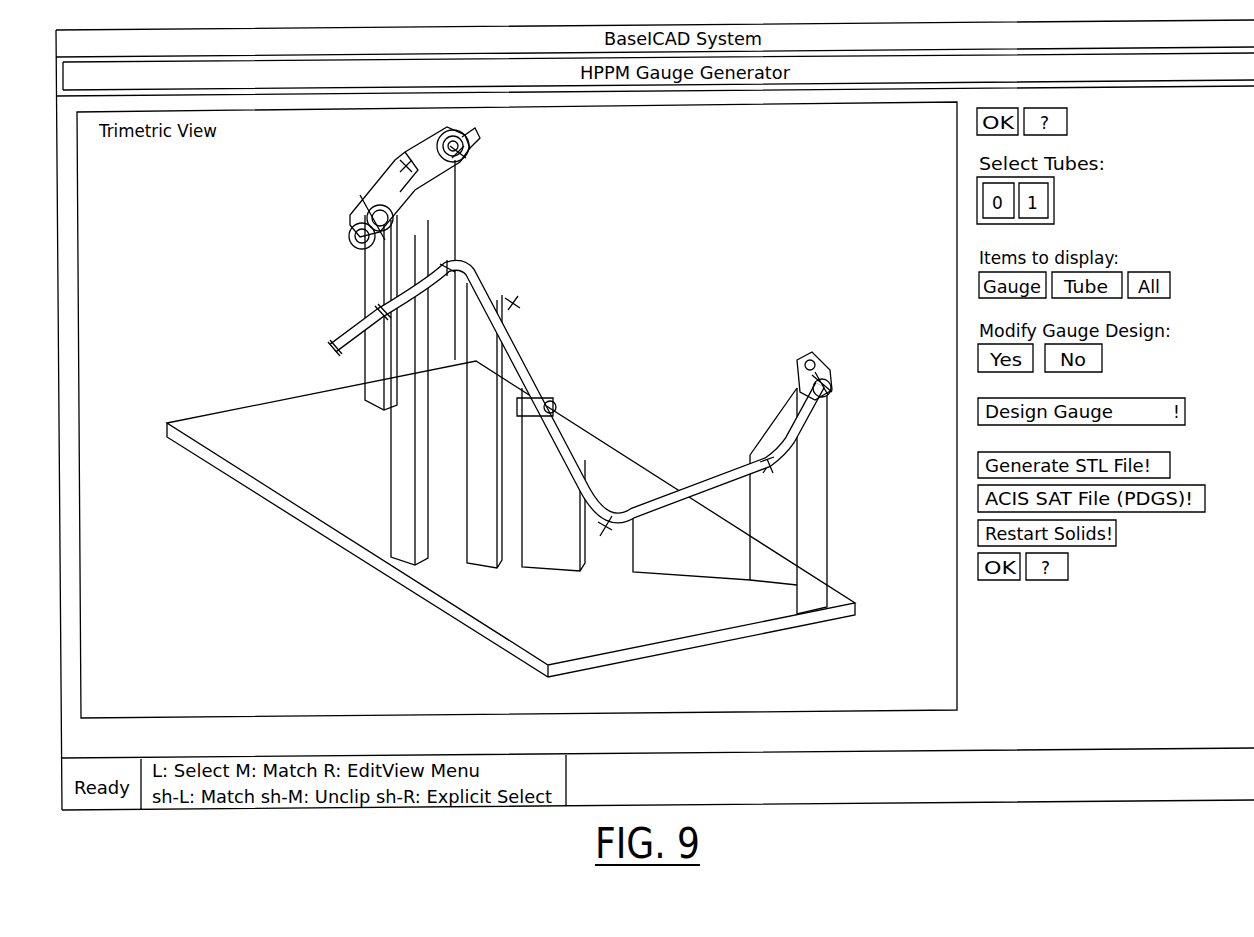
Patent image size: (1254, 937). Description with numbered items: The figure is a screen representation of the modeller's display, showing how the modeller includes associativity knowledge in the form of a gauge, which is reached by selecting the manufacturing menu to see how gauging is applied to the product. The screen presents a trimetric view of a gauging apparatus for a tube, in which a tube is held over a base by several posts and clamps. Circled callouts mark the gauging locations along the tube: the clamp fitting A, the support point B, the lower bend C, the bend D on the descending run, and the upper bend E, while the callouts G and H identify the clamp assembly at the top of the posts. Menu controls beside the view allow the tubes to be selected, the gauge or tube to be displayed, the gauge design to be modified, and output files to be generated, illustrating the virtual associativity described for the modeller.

The tube end clamp at right post A is at (829, 378).
The tube support point on inclined block B is at (786, 466).
The lower tube bend C is at (618, 520).
The tube bend at descending segment D is at (530, 306).
The upper tube bend E is at (466, 270).
The clamp block G is at (388, 171).
The clamp end fitting H is at (476, 157).